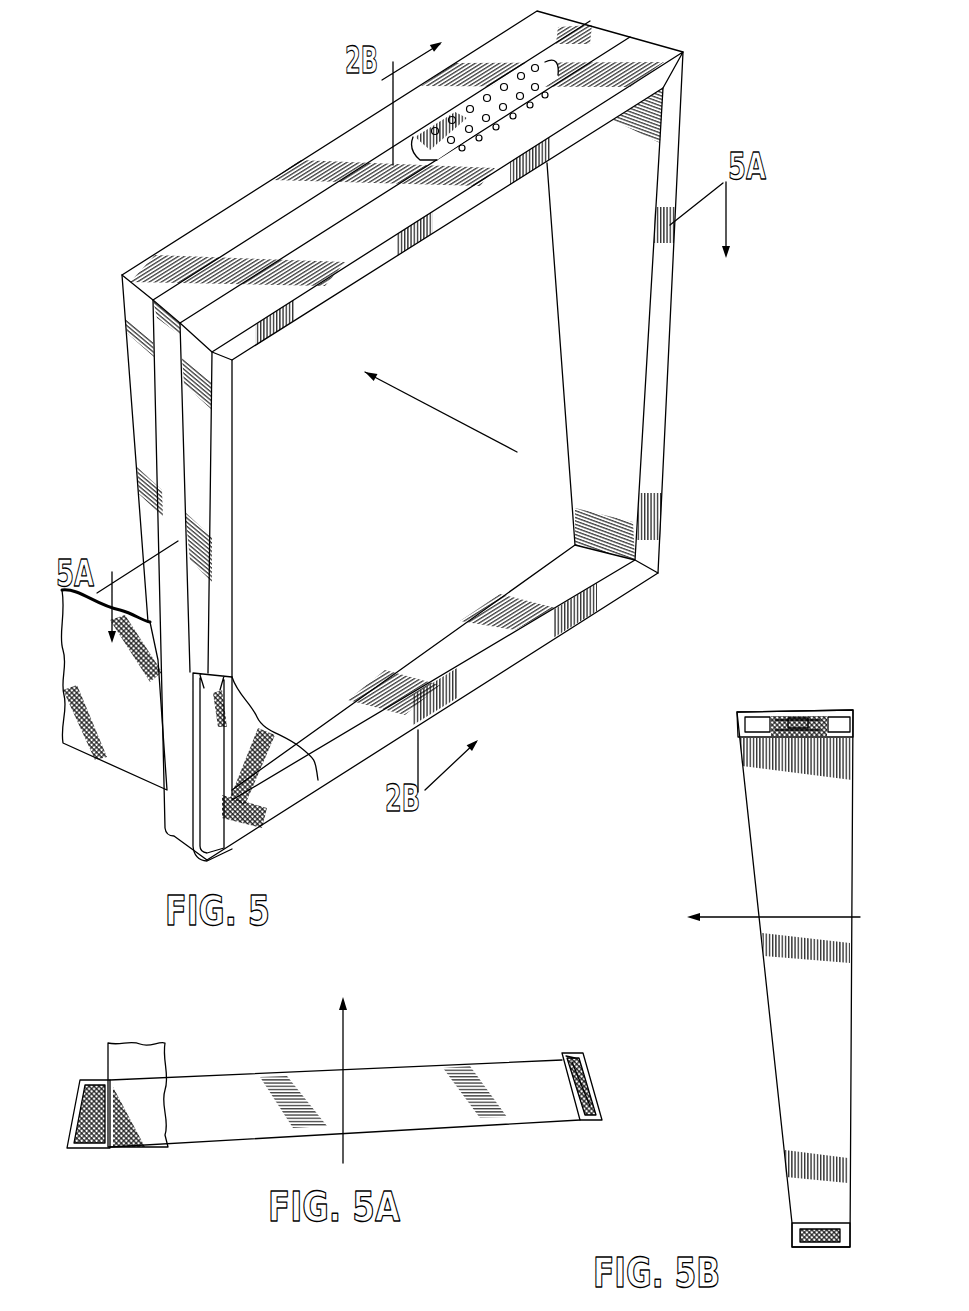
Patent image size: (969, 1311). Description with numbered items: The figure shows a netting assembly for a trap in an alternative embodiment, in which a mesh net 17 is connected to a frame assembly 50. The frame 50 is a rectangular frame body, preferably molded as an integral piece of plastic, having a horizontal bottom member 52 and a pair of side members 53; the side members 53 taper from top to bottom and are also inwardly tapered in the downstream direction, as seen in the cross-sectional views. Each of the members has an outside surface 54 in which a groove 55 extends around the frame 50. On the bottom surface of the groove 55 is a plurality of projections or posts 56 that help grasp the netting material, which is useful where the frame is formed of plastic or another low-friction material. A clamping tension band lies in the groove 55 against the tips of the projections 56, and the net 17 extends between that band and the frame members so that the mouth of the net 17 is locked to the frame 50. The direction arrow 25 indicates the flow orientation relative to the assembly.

In FIG. 5, the mesh net 17 is at (135, 719).
In FIG. 5A, the mesh net 17 is at (144, 1050).
In FIG. 5, the direction arrow 25 is at (428, 404).
In FIG. 5A, the direction arrow 25 is at (342, 1056).
In FIG. 5B, the direction arrow 25 is at (812, 915).
In FIG. 5, the frame assembly 50 is at (441, 433).
In FIG. 5A, the frame assembly 50 is at (367, 1113).
In FIG. 5B, the frame assembly 50 is at (783, 971).
In FIG. 5, the bottom member 52 is at (613, 587).
In FIG. 5B, the bottom member 52 is at (852, 1233).
In FIG. 5, the side members 53 is at (668, 316).
In FIG. 5A, the side members 53 is at (78, 1150).
In FIG. 5B, the side members 53 is at (782, 987).
In FIG. 5, the outside surface 54 is at (652, 50).
In FIG. 5A, the outside surface 54 is at (100, 1080).
In FIG. 5B, the outside surface 54 is at (760, 712).
In FIG. 5, the groove 55 is at (282, 224).
In FIG. 5A, the groove 55 is at (597, 1098).
In FIG. 5B, the groove 55 is at (807, 710).
In FIG. 5A, the projections or posts 56 is at (585, 1070).
In FIG. 5B, the projections or posts 56 is at (788, 712).